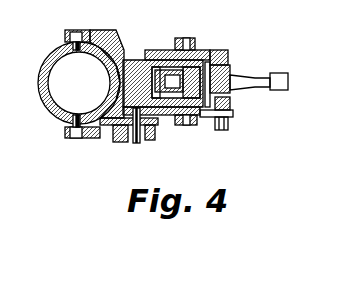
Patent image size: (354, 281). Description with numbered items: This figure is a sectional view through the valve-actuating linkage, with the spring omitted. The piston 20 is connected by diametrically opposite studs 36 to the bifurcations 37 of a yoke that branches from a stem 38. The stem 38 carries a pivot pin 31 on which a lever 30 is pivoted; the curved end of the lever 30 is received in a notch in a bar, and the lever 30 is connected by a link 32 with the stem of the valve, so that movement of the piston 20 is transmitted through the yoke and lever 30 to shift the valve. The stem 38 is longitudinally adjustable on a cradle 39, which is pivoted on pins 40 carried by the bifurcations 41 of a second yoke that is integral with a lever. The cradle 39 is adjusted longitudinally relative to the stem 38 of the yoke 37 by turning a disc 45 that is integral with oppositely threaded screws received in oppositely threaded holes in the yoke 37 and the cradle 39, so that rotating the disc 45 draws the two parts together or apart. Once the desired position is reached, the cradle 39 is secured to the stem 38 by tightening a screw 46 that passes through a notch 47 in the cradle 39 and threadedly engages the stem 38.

The piston 20 is at (38, 75).
The lever 30 is at (290, 78).
The pin 31 is at (232, 75).
The link 32 is at (166, 72).
The studs 36 is at (78, 115).
The bifurcations of yoke 37 is at (114, 32).
The stem 38 is at (232, 66).
The cradle 39 is at (215, 52).
The pins 40 is at (190, 38).
The bifurcations 41 is at (208, 62).
The disc 45 is at (136, 143).
The screw 46 is at (228, 128).
The notch 47 is at (232, 111).